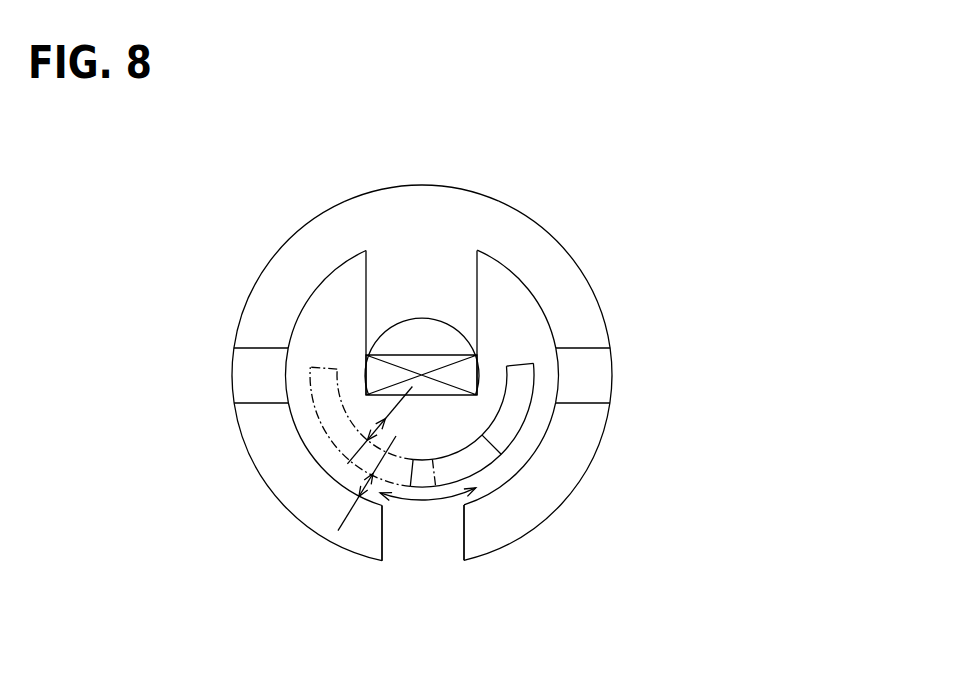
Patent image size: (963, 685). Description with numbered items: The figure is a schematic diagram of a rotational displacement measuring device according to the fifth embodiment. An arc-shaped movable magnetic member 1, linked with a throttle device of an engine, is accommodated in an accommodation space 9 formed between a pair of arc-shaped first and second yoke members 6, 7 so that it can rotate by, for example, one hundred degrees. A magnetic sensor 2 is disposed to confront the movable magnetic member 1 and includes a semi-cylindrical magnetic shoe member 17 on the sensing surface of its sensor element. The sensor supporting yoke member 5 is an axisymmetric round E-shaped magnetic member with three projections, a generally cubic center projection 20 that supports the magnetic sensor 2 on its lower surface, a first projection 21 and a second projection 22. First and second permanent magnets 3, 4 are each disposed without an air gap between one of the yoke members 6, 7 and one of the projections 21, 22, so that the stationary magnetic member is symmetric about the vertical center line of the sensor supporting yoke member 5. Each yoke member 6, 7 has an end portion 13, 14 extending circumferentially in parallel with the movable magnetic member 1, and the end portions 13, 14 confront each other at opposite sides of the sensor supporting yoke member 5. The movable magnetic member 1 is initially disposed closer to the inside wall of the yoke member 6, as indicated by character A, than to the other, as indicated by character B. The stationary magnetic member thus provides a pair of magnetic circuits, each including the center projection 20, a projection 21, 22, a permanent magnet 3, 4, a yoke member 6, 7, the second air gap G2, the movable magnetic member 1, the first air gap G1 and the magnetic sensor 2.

The movable magnetic member 1 is at (480, 460).
The magnetic sensor 2 is at (423, 372).
The first permanent magnet 3 is at (598, 364).
The second permanent magnet 4 is at (243, 372).
The sensor supporting yoke member 5 is at (385, 187).
The first yoke member 6 is at (577, 497).
The second yoke member 7 is at (258, 482).
The accommodation space 9 is at (352, 333).
The end portion 13 is at (478, 537).
The end portion 14 is at (368, 537).
The magnetic shoe member 17 is at (447, 403).
The center projection 20 is at (398, 303).
The first projection 21 is at (513, 230).
The second projection 22 is at (300, 260).
The closer inside wall position A is at (527, 363).
The farther inside wall position B is at (299, 314).
The first air gap G1 is at (379, 425).
The second air gap G2 is at (367, 483).